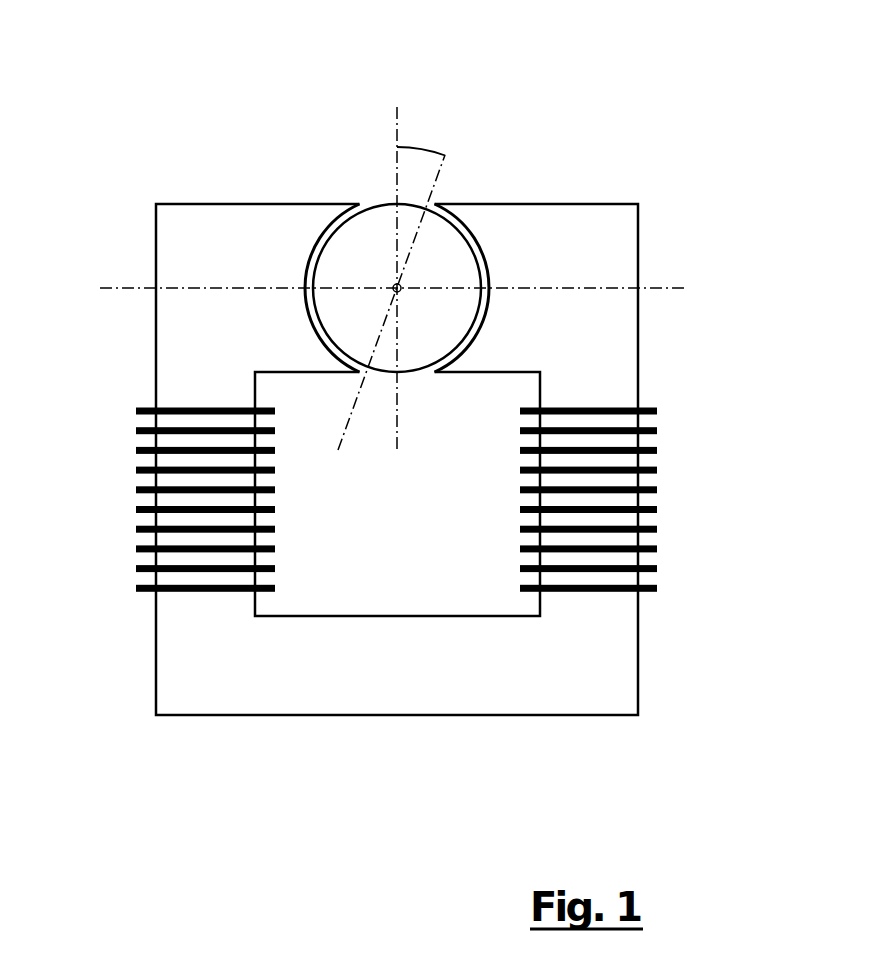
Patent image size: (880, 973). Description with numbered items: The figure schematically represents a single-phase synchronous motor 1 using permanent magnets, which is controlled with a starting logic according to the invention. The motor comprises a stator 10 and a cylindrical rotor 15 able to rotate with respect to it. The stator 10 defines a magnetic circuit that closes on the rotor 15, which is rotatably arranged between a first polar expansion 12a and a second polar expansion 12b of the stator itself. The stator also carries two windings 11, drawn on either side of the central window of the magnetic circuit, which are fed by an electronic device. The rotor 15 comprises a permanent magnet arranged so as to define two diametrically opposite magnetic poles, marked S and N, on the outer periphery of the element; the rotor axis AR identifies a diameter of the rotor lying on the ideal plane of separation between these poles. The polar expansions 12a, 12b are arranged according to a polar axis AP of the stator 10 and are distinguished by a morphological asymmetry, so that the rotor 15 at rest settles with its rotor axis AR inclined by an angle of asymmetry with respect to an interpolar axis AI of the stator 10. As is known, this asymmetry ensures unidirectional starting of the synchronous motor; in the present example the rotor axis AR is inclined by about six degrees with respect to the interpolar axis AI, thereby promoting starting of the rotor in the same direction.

The single-phase synchronous motor 1 is at (408, 735).
The stator 10 is at (190, 243).
The windings 11 is at (168, 447).
The first polar expansion 12a is at (302, 262).
The second polar expansion 12b is at (495, 258).
The rotor 15 is at (382, 223).
The interpolar axis AI is at (395, 180).
The rotor axis AR is at (433, 187).
The polar axis AP is at (657, 287).